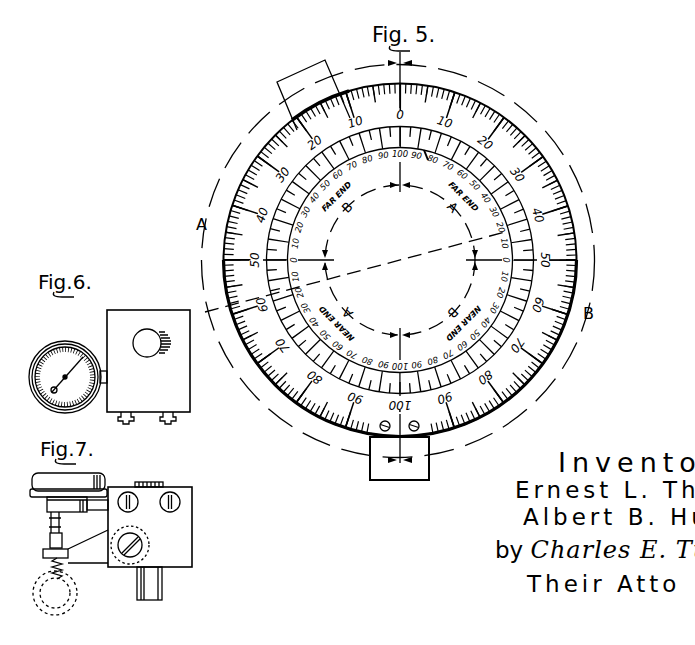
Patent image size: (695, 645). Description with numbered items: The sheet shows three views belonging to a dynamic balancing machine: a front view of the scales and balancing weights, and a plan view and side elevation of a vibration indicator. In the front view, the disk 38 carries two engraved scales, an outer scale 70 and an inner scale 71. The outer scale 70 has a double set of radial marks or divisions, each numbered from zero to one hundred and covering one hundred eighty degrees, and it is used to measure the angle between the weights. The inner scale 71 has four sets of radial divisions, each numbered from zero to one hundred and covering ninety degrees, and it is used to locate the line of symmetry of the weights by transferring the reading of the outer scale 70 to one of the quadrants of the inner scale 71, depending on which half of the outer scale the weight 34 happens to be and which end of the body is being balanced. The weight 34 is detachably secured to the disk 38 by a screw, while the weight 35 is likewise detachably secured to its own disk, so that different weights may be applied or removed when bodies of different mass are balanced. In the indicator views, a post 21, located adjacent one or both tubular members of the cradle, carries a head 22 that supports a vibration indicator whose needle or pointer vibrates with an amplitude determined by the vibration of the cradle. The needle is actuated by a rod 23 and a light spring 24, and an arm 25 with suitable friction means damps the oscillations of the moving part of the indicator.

In FIG. 7, the post 21 is at (160, 583).
In FIG. 6, the head 22 is at (148, 361).
In FIG. 7, the head 22 is at (150, 524).
In FIG. 7, the rod 23 is at (50, 528).
In FIG. 7, the light spring 24 is at (52, 566).
In FIG. 7, the arm 25 is at (75, 546).
In FIG. 5, the weight 34 is at (313, 64).
In FIG. 5, the weight 35 is at (380, 480).
In FIG. 5, the disk 38 is at (519, 124).
In FIG. 5, the outer scale 70 is at (428, 160).
In FIG. 5, the inner scale 71 is at (575, 262).